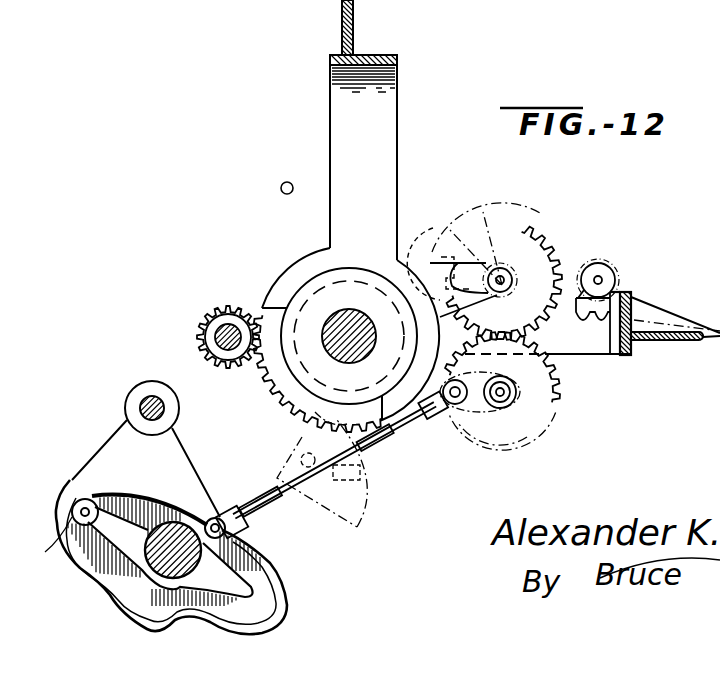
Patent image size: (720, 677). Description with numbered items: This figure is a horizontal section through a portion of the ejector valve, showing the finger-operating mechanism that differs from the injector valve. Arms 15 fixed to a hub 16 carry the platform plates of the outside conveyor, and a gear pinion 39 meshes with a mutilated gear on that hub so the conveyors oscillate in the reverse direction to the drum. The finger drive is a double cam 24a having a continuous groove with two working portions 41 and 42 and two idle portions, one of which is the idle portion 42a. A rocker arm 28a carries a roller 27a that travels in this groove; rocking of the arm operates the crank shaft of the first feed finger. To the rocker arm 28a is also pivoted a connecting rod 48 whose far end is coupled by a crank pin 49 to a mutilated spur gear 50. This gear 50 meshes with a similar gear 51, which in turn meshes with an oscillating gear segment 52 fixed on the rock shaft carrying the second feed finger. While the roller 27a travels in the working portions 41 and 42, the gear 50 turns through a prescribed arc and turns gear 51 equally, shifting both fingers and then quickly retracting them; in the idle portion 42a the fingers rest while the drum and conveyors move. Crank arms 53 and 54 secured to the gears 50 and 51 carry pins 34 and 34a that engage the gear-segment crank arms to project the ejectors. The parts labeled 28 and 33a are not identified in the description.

The arm 15 is at (196, 0).
The gear pinion 39 is at (268, 0).
The hub 16 is at (433, 0).
The cylinder 33a is at (486, 0).
The shaft 28 is at (490, 24).
The pin 34a is at (456, 262).
The gear 51 is at (517, 236).
The crank arm 54 is at (496, 266).
The oscillating gear segment 52 is at (592, 300).
The mutilated spur gear 50 is at (550, 407).
The pin 34 is at (428, 425).
The crank arm 53 is at (470, 410).
The crank pin 49 is at (452, 403).
The connecting rod 48 is at (333, 480).
The working portion of cam groove 41 is at (245, 533).
The rocker arm 28a is at (113, 447).
The roller 27a is at (73, 499).
The idle portion of cam groove 42a is at (52, 550).
The working portion of cam groove 42 is at (157, 590).
The double cam 24a is at (180, 633).